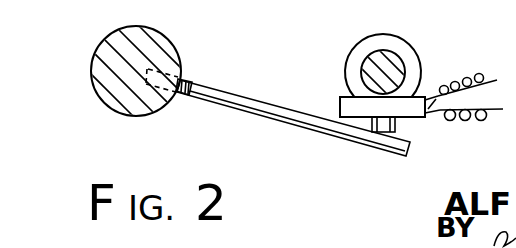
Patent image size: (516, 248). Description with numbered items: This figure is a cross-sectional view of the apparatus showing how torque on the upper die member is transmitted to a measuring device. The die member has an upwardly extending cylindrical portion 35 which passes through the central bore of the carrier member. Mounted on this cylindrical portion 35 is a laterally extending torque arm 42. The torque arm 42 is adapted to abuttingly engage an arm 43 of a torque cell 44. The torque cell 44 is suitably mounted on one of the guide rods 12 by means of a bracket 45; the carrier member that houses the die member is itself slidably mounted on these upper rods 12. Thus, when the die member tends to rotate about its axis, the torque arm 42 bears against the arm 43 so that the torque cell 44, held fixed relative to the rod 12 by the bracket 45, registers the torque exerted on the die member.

The upwardly extending cylindrical portion 35 is at (122, 45).
The torque arm 42 is at (253, 108).
The bracket 45 is at (368, 45).
The upper rods 12 is at (390, 63).
The torque cell 44 is at (347, 107).
The arm 43 is at (395, 128).